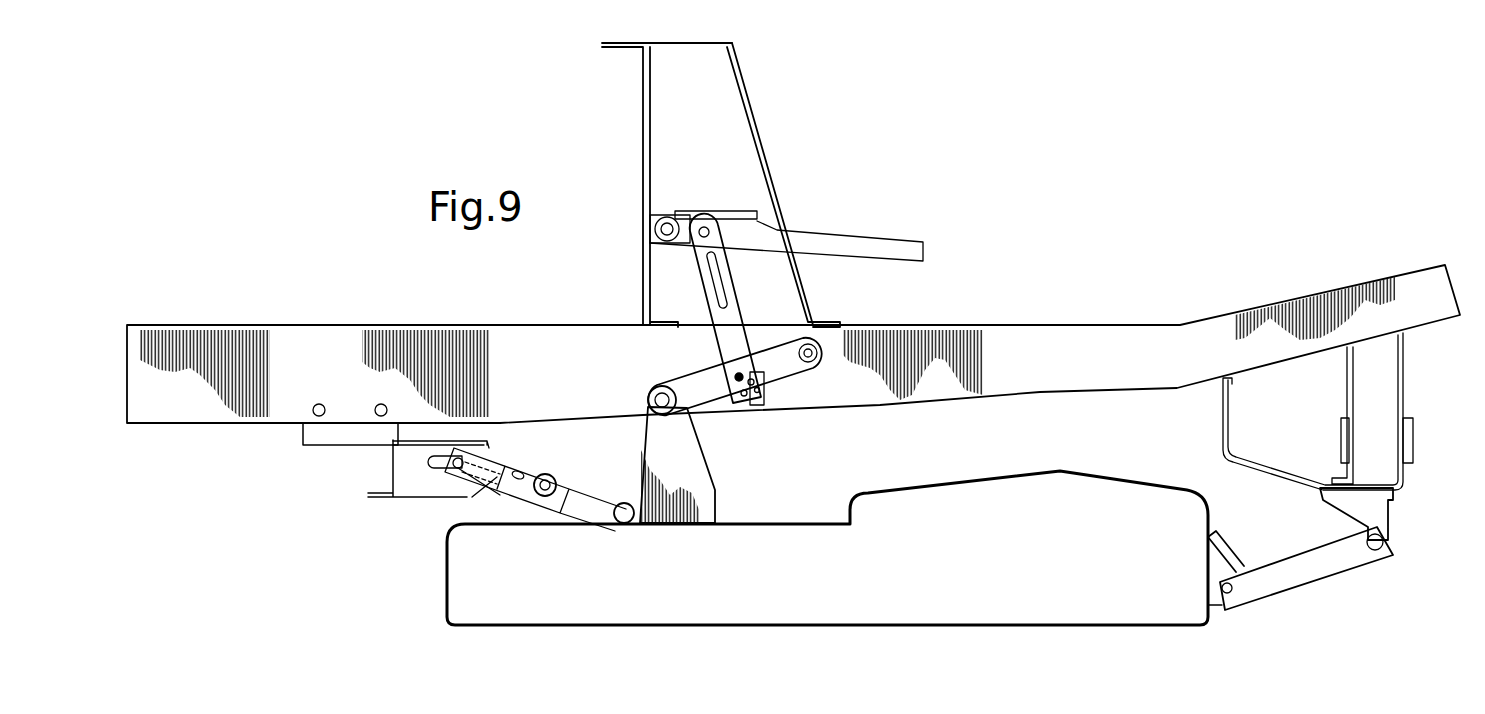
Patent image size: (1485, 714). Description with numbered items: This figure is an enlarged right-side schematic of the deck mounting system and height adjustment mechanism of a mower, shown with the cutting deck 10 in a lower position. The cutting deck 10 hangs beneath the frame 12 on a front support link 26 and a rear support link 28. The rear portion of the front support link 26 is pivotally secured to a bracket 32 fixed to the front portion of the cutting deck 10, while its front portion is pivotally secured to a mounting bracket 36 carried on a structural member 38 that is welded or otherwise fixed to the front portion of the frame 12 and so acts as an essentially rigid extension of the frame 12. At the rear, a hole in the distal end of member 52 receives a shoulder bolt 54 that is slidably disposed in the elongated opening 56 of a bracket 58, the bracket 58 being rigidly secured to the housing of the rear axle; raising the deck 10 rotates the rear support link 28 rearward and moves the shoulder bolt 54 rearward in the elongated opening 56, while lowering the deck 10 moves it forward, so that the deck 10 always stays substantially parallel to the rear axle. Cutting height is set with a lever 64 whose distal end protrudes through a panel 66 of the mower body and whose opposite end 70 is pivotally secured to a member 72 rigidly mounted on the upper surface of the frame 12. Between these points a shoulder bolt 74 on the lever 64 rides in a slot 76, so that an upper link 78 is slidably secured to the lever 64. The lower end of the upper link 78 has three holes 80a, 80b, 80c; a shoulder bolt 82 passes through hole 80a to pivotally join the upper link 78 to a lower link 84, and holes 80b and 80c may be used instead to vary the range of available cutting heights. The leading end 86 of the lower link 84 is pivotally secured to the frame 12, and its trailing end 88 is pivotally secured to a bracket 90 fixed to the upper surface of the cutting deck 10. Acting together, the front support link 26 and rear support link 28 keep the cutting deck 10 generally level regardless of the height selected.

The cutting deck 10 is at (1014, 555).
The frame 12 is at (1088, 368).
The front support link 26 is at (1290, 588).
The rear support link 28 is at (624, 522).
The bracket 32 is at (1224, 556).
The mounting bracket 36 is at (1382, 520).
The structural member 38 is at (1403, 390).
The member 52 is at (505, 456).
The shoulder bolt 54 is at (465, 486).
The elongated opening 56 is at (432, 470).
The bracket 58 is at (393, 470).
The lever 64 is at (882, 242).
The panel 66 is at (758, 120).
The opposite end of lever 70 is at (680, 214).
The member 72 is at (645, 268).
The shoulder bolt 74 is at (705, 226).
The slot 76 is at (718, 277).
The upper link 78 is at (737, 316).
The hole 80a is at (762, 378).
The hole 80b is at (757, 396).
The hole 80c is at (744, 400).
The shoulder bolt 82 is at (737, 375).
The lower link 84 is at (685, 385).
The leading end 86 is at (815, 358).
The trailing end 88 is at (660, 384).
The bracket 90 is at (684, 467).